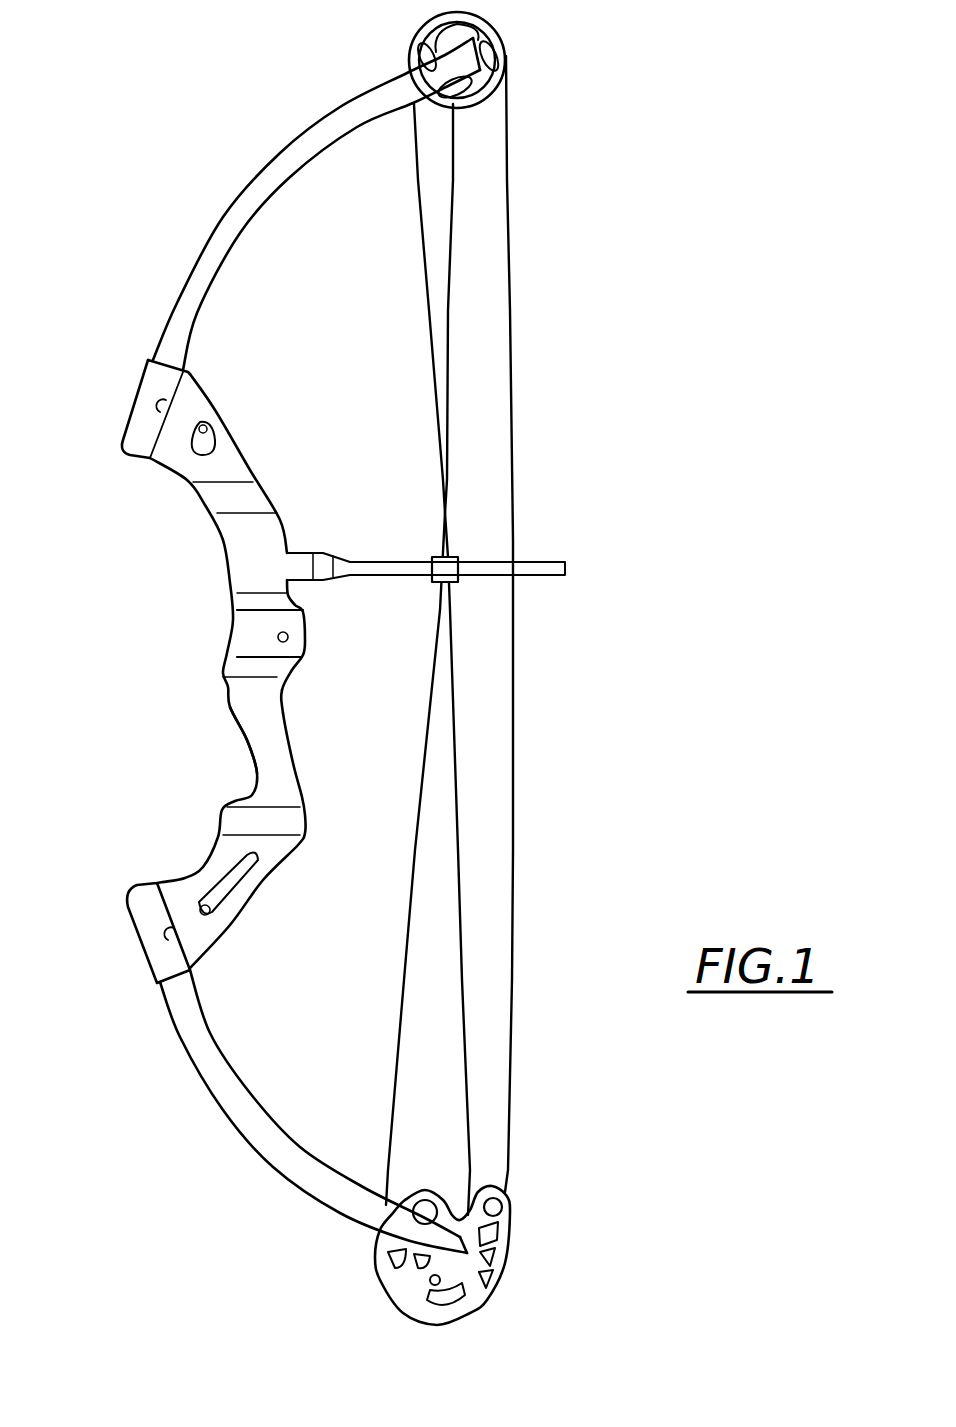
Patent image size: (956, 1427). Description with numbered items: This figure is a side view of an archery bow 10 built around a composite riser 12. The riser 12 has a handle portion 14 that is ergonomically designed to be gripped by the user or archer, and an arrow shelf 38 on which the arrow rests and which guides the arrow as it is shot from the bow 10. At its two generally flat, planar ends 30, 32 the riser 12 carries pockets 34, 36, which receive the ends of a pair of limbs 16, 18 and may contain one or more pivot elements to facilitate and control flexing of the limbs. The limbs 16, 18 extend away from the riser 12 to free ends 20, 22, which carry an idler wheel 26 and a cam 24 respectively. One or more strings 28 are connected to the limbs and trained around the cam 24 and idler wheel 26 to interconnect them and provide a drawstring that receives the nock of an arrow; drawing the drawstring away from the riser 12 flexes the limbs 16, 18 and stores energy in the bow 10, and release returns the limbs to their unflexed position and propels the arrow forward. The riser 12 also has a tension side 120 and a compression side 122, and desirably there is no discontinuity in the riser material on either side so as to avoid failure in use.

The archery bow 10 is at (188, 152).
The composite riser 12 is at (317, 671).
The handle portion 14 is at (288, 735).
The limb 16 is at (178, 312).
The limb 18 is at (208, 1055).
The free end 20 is at (482, 56).
The free end 22 is at (471, 1255).
The cam 24 is at (488, 1280).
The idler wheel 26 is at (483, 30).
The strings 28 is at (453, 238).
The end of riser 30 is at (175, 400).
The end of riser 32 is at (167, 937).
The pocket 34 is at (148, 390).
The pocket 36 is at (153, 940).
The arrow shelf 38 is at (235, 642).
The tension side 120 is at (230, 718).
The compression side 122 is at (285, 690).